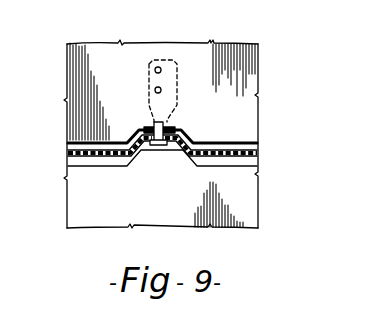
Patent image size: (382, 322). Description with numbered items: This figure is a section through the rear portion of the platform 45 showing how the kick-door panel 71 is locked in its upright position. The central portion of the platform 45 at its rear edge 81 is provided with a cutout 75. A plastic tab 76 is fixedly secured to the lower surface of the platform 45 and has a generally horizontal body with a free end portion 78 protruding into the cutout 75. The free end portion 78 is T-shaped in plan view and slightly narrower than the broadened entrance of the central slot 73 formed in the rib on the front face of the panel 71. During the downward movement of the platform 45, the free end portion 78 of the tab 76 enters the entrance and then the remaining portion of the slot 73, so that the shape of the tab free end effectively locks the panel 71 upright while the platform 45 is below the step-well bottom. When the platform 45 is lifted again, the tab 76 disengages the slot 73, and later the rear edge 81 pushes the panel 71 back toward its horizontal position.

The platform 45 is at (230, 122).
The kick-door panel 71 is at (258, 153).
The central slot 73 is at (152, 128).
The cutout 75 is at (180, 127).
The plastic tab 76 is at (177, 63).
The free end portion 78 is at (160, 150).
The rear edge 81 is at (68, 144).